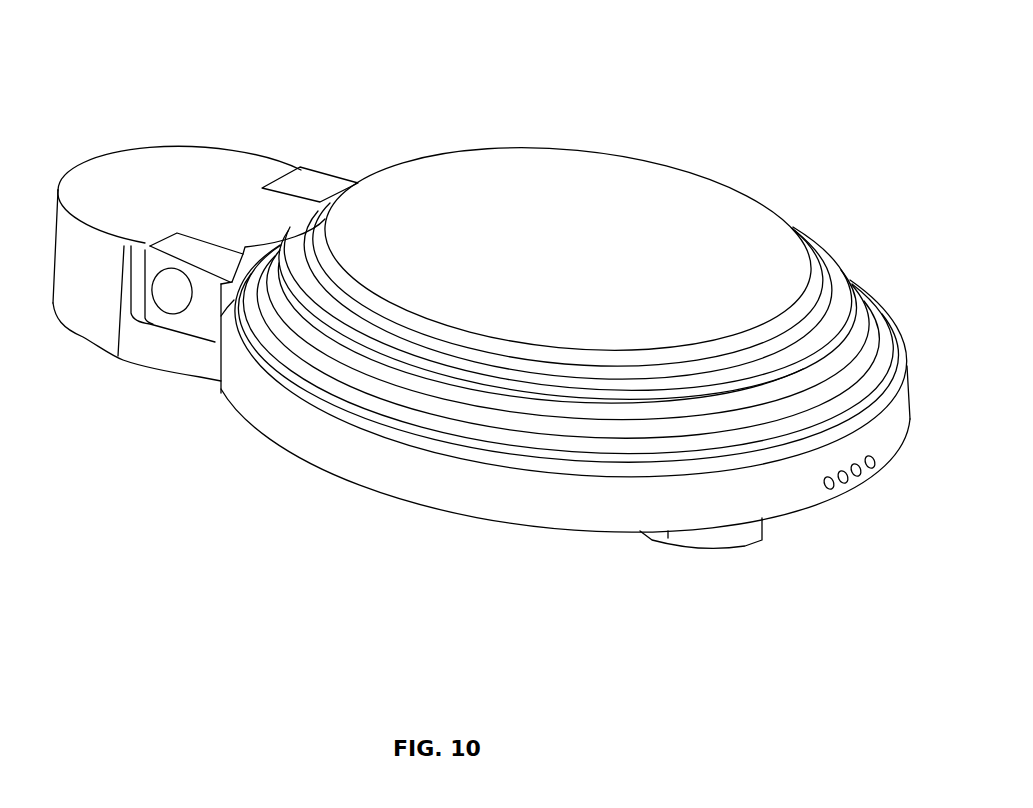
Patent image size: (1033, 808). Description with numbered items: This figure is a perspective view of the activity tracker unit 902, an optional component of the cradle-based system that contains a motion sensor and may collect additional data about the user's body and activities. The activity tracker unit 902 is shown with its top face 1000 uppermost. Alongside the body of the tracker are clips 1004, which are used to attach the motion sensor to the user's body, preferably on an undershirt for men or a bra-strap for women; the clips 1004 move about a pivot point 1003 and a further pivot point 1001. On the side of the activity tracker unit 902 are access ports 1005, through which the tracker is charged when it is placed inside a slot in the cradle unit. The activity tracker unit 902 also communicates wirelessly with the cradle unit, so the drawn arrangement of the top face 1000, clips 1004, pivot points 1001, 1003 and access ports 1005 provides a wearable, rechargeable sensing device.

The activity tracker unit 902 is at (158, 158).
The top face 1000 is at (498, 207).
The pivot point 1001 is at (318, 173).
The pivot point 1003 is at (173, 296).
The clips 1004 is at (707, 545).
The access ports 1005 is at (833, 492).